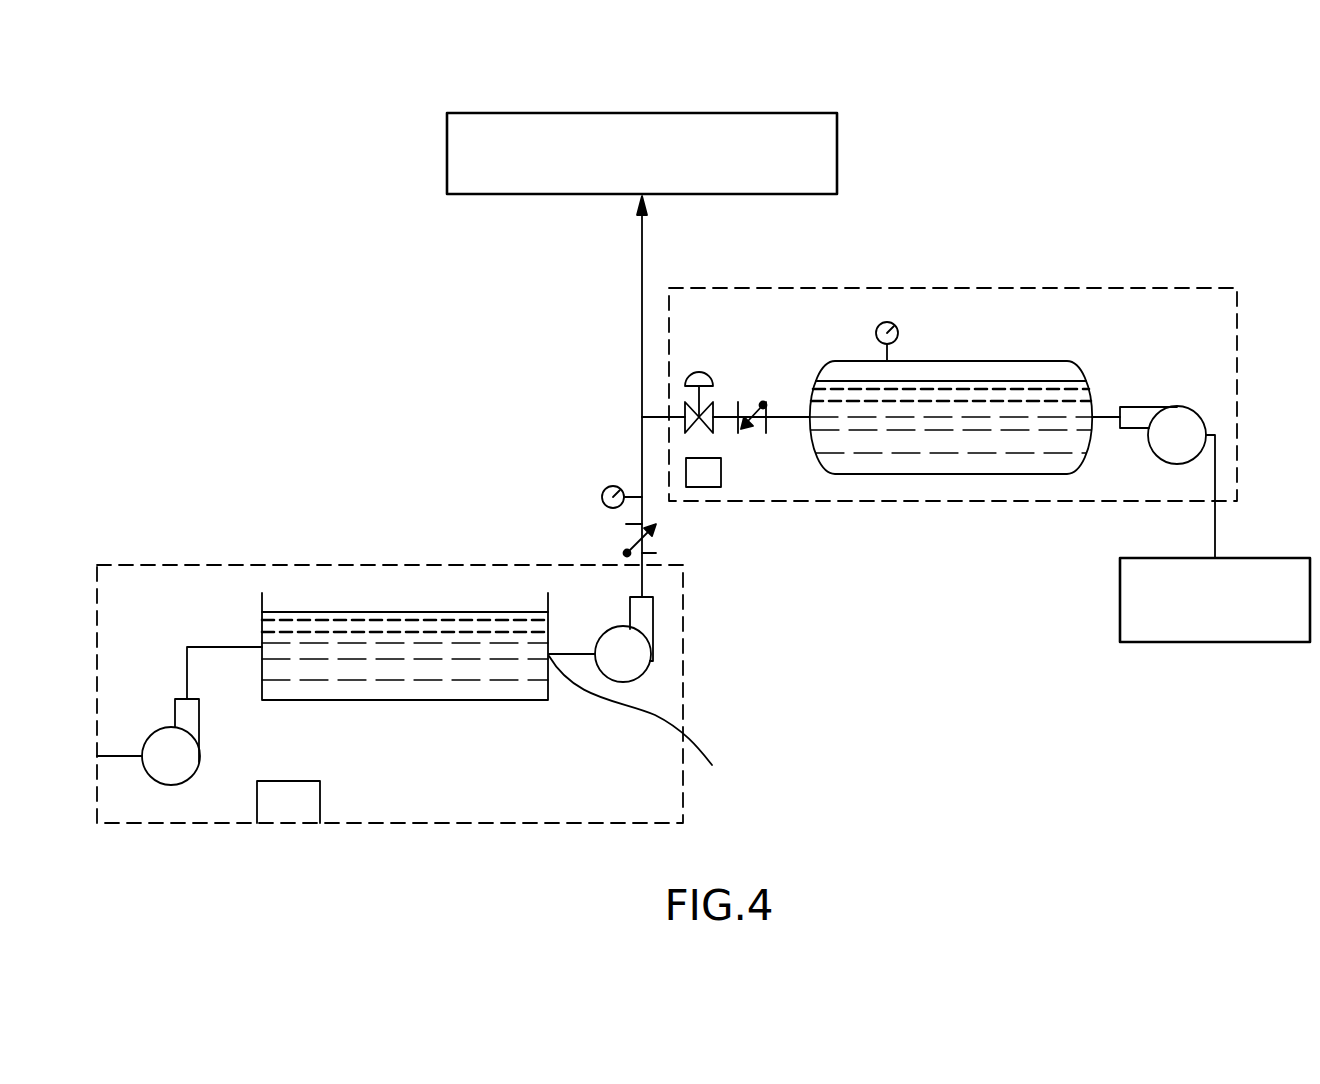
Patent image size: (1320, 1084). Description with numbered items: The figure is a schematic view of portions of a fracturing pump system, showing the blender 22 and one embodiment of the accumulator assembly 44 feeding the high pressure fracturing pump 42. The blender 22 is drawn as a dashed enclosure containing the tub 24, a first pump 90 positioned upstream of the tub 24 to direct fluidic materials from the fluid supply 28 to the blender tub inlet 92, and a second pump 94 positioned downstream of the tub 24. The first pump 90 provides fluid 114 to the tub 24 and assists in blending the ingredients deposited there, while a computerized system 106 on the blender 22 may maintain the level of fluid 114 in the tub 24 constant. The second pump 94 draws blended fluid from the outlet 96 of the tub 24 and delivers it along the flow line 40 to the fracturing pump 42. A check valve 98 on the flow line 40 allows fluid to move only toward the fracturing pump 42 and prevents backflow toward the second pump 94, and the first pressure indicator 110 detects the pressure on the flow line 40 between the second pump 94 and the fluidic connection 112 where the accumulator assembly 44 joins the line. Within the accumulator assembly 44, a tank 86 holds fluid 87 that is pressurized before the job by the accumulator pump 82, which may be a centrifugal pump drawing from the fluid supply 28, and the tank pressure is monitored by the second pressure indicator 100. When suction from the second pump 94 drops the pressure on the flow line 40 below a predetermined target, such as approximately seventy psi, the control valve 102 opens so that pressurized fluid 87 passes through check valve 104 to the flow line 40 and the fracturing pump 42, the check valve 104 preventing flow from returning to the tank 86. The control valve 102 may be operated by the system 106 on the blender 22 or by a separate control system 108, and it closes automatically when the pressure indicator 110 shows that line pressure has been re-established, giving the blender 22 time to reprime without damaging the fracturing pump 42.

The high pressure fracturing pump 42 is at (642, 153).
The flow line 40 is at (642, 323).
The fluidic connection 112 is at (642, 417).
The pressure indicator PI1 110 is at (602, 496).
The check valve 98 is at (650, 542).
The accumulator assembly 44 is at (802, 501).
The control valve 102 is at (699, 375).
The check valve 104 is at (741, 410).
The control system 108 is at (706, 477).
The pressure indicator PI2 100 is at (887, 322).
The tank 86 is at (1043, 361).
The fluid 87 is at (937, 443).
The accumulator pump 82 is at (1155, 416).
The fluid supply 28 is at (1202, 634).
The blender 22 is at (285, 565).
The tub 24 is at (402, 702).
The fluid 114 is at (372, 666).
The blender tub inlet 92 is at (262, 645).
The first pump 90 is at (177, 765).
The system 106 is at (293, 805).
The second pump 94 is at (625, 663).
The outlet 96 is at (638, 726).